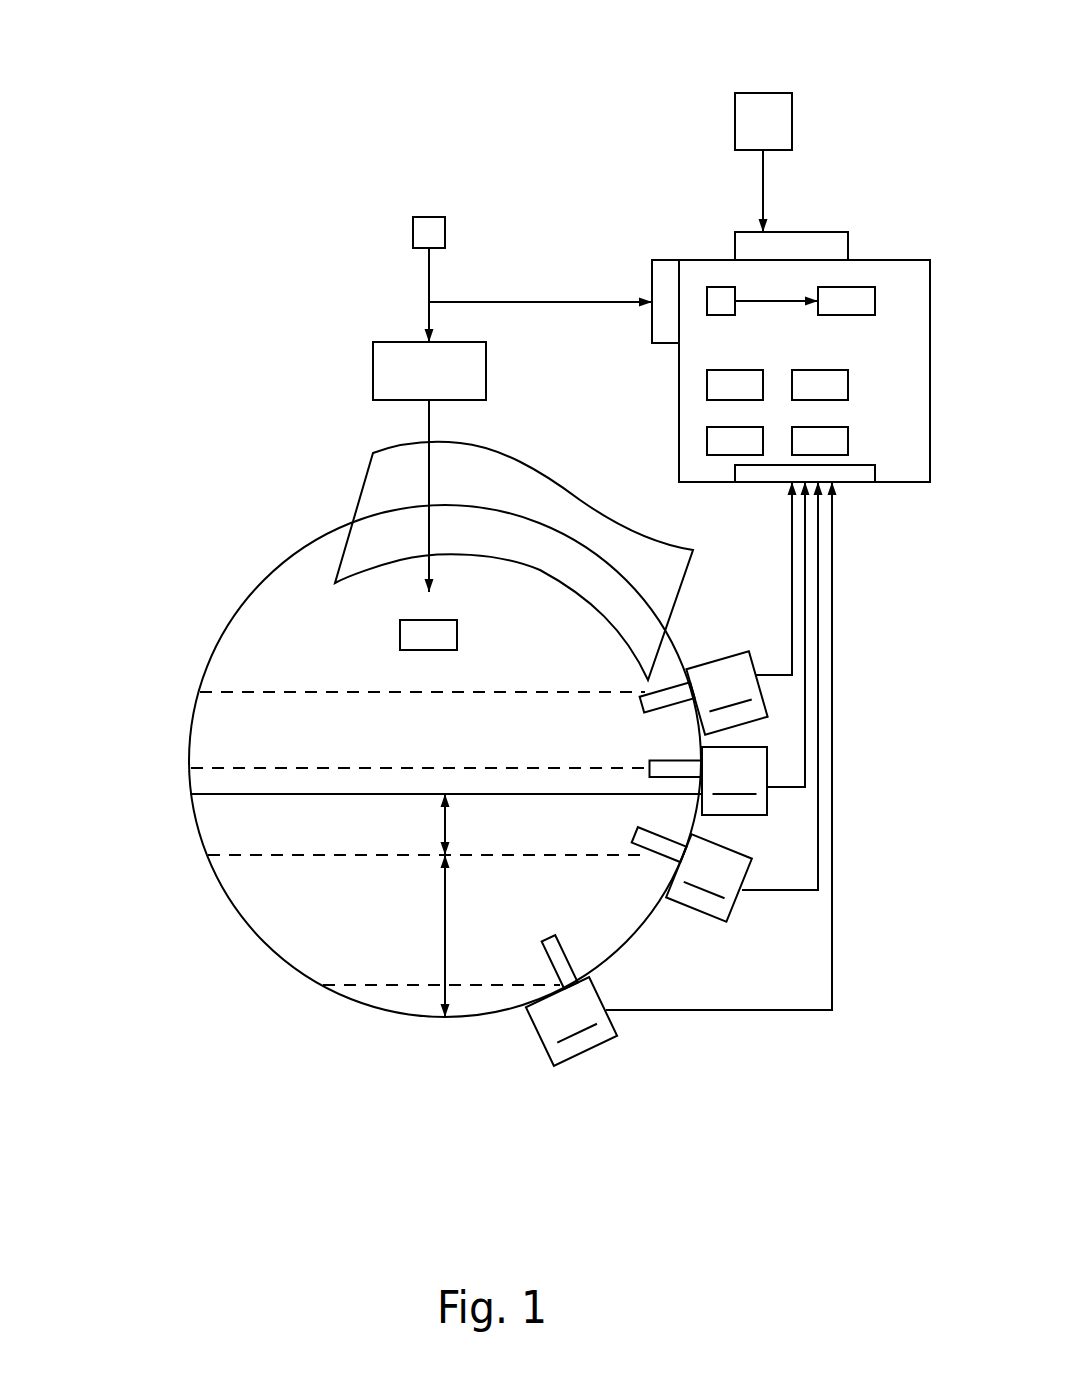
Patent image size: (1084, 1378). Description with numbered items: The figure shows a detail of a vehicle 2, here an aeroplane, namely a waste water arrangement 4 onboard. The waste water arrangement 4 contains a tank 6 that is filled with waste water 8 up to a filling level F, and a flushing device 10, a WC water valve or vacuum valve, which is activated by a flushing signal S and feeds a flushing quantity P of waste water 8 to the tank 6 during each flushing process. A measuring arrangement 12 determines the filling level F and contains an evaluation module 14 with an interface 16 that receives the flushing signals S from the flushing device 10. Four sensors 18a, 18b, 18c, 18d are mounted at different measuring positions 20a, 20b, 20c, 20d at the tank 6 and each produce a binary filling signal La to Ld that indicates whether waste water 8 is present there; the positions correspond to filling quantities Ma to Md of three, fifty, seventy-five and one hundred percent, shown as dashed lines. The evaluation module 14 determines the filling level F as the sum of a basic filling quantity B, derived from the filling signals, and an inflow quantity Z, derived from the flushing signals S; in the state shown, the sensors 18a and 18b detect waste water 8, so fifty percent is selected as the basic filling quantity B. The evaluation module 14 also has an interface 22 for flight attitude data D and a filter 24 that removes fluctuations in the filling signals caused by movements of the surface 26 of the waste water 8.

The vehicle 2 is at (115, 162).
The waste water arrangement 4 is at (470, 90).
The tank 6 is at (285, 563).
The waste water 8 is at (400, 633).
The flushing device 10 is at (444, 385).
The measuring arrangement 12 is at (320, 175).
The evaluation module 14 is at (893, 260).
The interface 16 is at (652, 275).
The sensor 18a is at (597, 1005).
The sensor 18b is at (757, 862).
The sensor 18c is at (777, 768).
The sensor 18d is at (702, 678).
The measuring position 20a is at (583, 975).
The measuring position 20b is at (668, 846).
The measuring position 20c is at (700, 768).
The measuring position 20d is at (690, 690).
The interface 22 is at (813, 232).
The filter 24 is at (875, 481).
The surface 26 is at (280, 794).